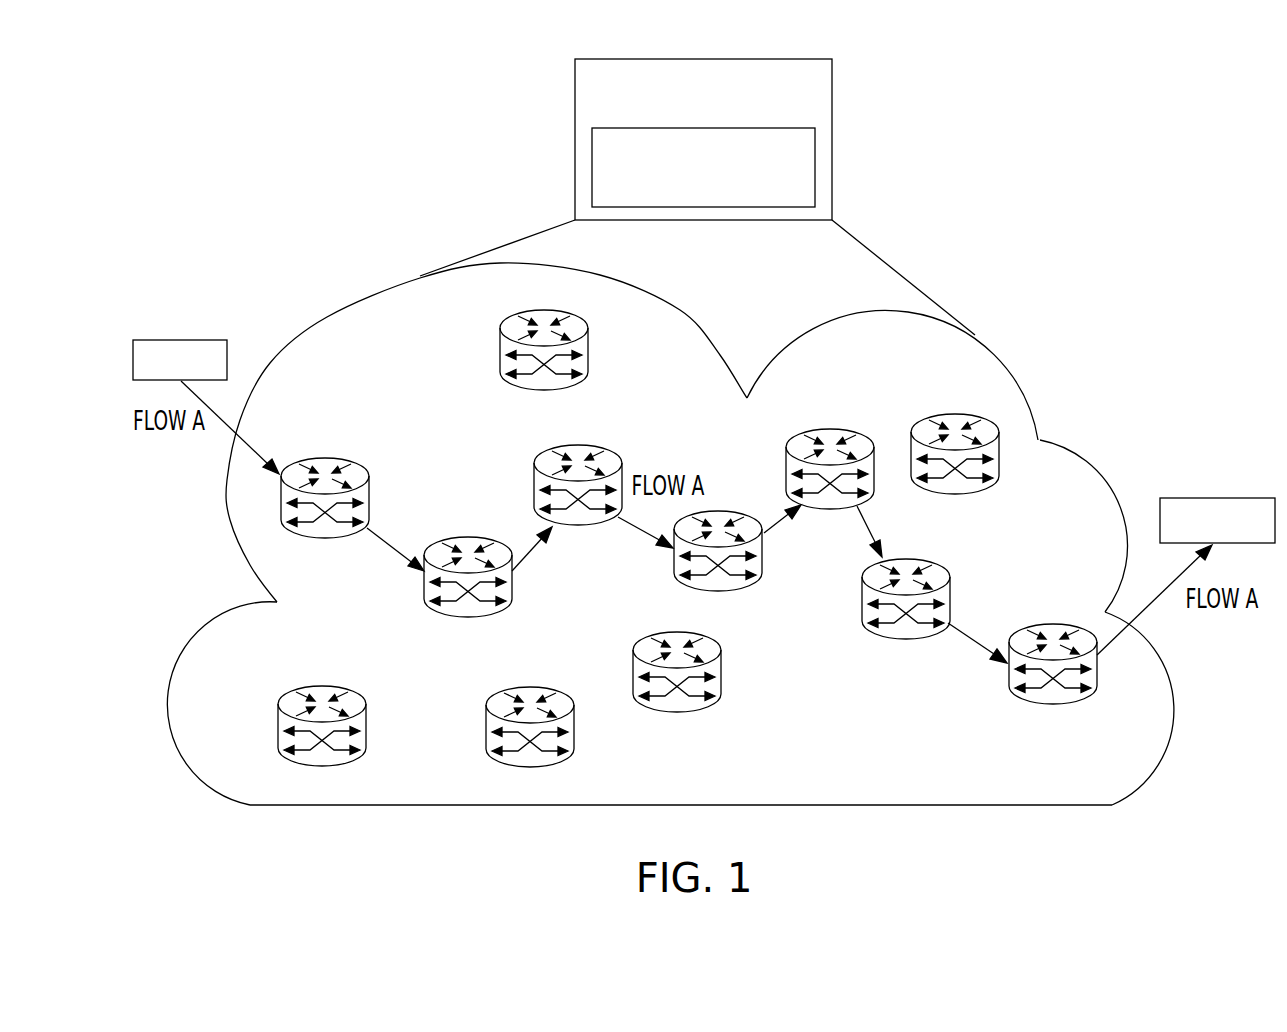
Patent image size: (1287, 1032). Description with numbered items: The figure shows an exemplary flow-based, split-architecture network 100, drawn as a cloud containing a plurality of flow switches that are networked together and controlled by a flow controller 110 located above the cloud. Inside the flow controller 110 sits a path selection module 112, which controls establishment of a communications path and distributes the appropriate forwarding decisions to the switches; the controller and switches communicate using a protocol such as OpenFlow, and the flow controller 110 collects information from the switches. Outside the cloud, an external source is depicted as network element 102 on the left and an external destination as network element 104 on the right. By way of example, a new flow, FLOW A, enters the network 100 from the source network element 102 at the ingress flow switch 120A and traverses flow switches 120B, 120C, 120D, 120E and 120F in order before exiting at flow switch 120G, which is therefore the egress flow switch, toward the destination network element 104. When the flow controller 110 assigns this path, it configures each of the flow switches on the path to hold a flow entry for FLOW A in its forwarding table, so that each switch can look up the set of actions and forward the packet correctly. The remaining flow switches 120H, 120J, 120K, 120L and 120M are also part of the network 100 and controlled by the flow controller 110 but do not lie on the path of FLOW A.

The split-architecture network 100 is at (963, 806).
The network element 102 is at (200, 339).
The network element 104 is at (1217, 498).
The flow controller 110 is at (685, 120).
The path selection module 112 is at (737, 197).
The flow switch 120A is at (325, 516).
The flow switch 120B is at (468, 595).
The flow switch 120C is at (578, 503).
The flow switch 120D is at (718, 569).
The flow switch 120E is at (830, 487).
The flow switch 120F is at (906, 617).
The flow switch 120G is at (1053, 682).
The flow switch 120H is at (544, 368).
The flow switch 120J is at (322, 744).
The flow switch 120K is at (530, 745).
The flow switch 120L is at (677, 690).
The flow switch 120M is at (955, 472).